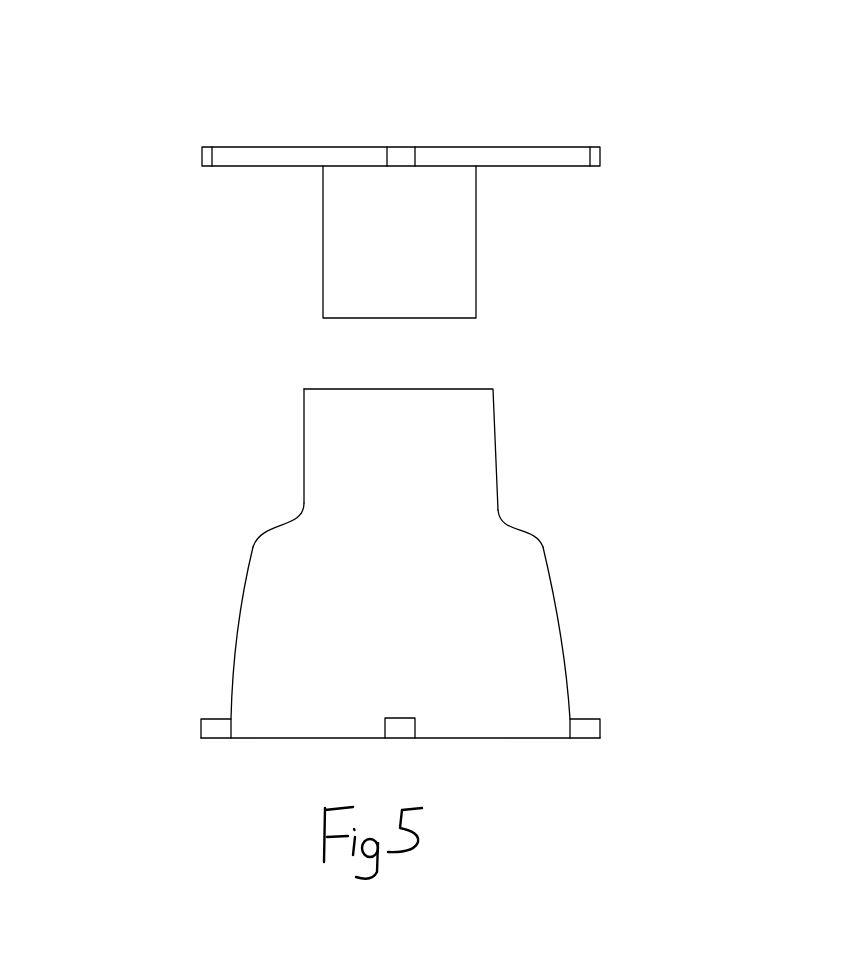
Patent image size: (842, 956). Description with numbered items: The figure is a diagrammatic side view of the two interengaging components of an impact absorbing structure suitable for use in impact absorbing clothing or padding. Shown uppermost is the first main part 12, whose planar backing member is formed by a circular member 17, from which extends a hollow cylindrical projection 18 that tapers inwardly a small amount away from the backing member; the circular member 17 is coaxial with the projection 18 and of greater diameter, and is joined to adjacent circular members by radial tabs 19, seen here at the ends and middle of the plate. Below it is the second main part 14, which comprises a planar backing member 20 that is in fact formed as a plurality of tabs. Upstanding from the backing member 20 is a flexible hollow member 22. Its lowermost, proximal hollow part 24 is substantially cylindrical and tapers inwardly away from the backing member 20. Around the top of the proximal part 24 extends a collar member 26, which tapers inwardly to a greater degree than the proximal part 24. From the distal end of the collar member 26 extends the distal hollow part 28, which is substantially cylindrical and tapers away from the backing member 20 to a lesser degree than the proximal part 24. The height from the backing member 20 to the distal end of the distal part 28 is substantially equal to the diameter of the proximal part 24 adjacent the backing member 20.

The first main part 12 is at (505, 182).
The second main part 14 is at (442, 594).
The circular member 17 is at (401, 110).
The cylindrical projection 18 is at (454, 242).
The radial tab 19 is at (448, 106).
The planar backing member 20 is at (426, 759).
The flexible hollow member 22 is at (491, 449).
The proximal hollow part 24 is at (338, 633).
The collar member 26 is at (353, 516).
The distal hollow part 28 is at (253, 446).